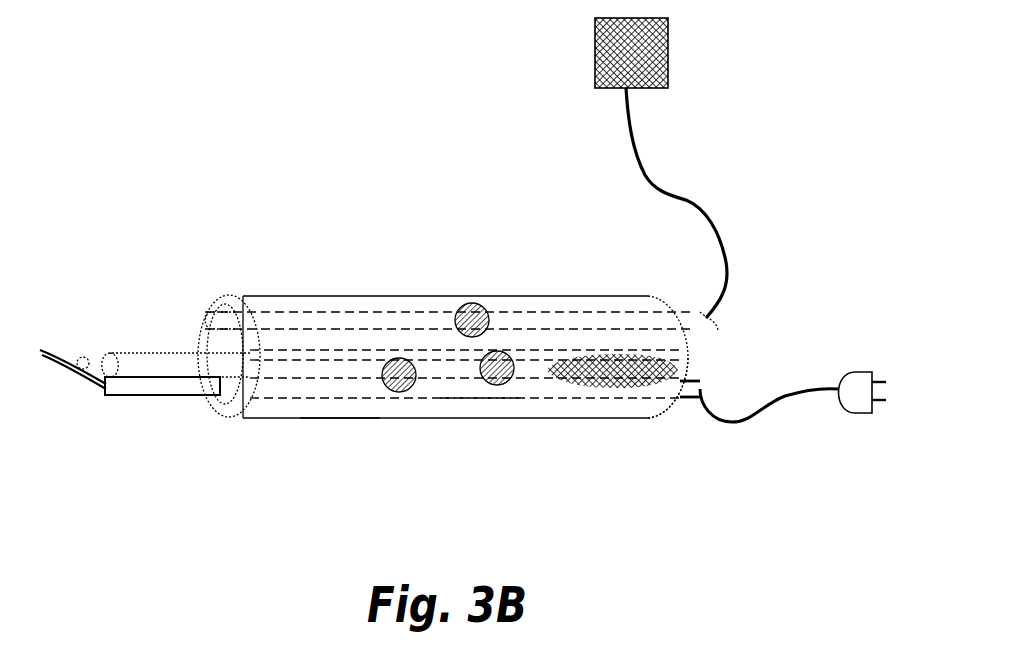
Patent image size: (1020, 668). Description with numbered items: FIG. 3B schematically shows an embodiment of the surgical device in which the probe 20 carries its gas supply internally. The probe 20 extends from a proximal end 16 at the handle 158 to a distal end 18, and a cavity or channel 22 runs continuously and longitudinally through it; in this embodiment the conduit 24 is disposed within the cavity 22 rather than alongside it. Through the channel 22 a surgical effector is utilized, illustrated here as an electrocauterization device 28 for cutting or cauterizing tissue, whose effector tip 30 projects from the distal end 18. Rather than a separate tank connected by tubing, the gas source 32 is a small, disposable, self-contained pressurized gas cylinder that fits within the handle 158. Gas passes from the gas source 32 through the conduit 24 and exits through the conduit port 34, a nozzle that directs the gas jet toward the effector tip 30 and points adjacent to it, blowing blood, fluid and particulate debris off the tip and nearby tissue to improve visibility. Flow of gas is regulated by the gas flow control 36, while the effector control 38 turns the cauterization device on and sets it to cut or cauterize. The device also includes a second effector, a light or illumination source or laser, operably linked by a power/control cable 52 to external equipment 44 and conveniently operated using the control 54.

The proximal end 16 is at (665, 414).
The distal end 18 is at (215, 416).
The probe 20 is at (431, 152).
The cavity or channel 22 is at (342, 420).
The conduit 24 is at (134, 353).
The electrocauterization device 28 is at (137, 398).
The effector tip 30 is at (57, 380).
The gas source 32 is at (590, 392).
The conduit port 34 is at (83, 357).
The gas flow control 36 is at (490, 402).
The effector control 38 is at (395, 392).
The control unit 44 is at (594, 62).
The power/control cable 52 is at (640, 162).
The control 54 is at (481, 304).
The handle 158 is at (365, 296).